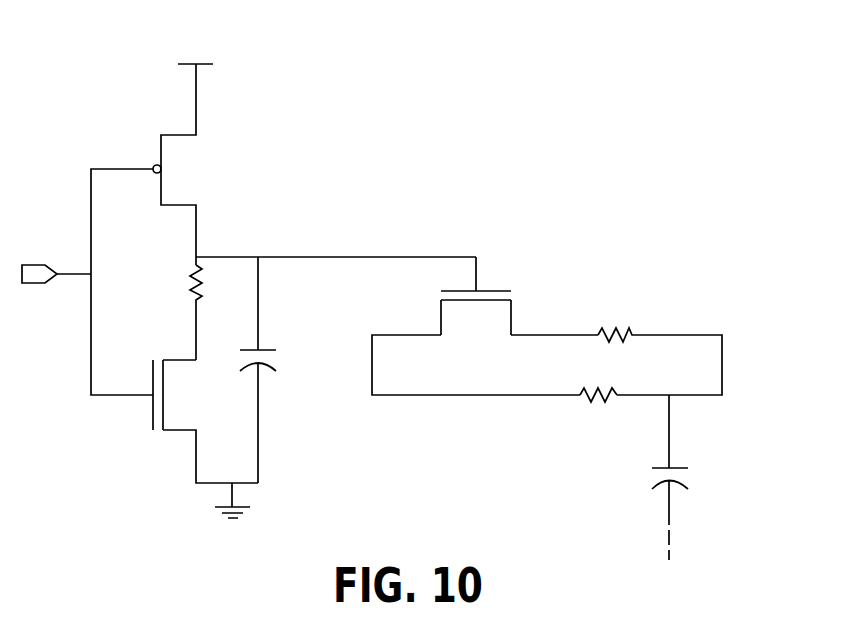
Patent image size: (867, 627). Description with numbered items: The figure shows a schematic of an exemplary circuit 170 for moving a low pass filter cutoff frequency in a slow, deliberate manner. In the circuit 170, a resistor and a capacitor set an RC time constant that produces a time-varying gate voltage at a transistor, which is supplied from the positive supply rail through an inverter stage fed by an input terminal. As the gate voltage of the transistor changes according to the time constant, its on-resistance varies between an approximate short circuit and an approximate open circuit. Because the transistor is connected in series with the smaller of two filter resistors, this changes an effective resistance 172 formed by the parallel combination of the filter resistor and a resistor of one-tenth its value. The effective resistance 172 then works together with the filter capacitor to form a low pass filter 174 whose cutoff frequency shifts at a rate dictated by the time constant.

The circuit 170 is at (517, 152).
The effective resistance 172 is at (712, 270).
The low pass filter 174 is at (771, 344).